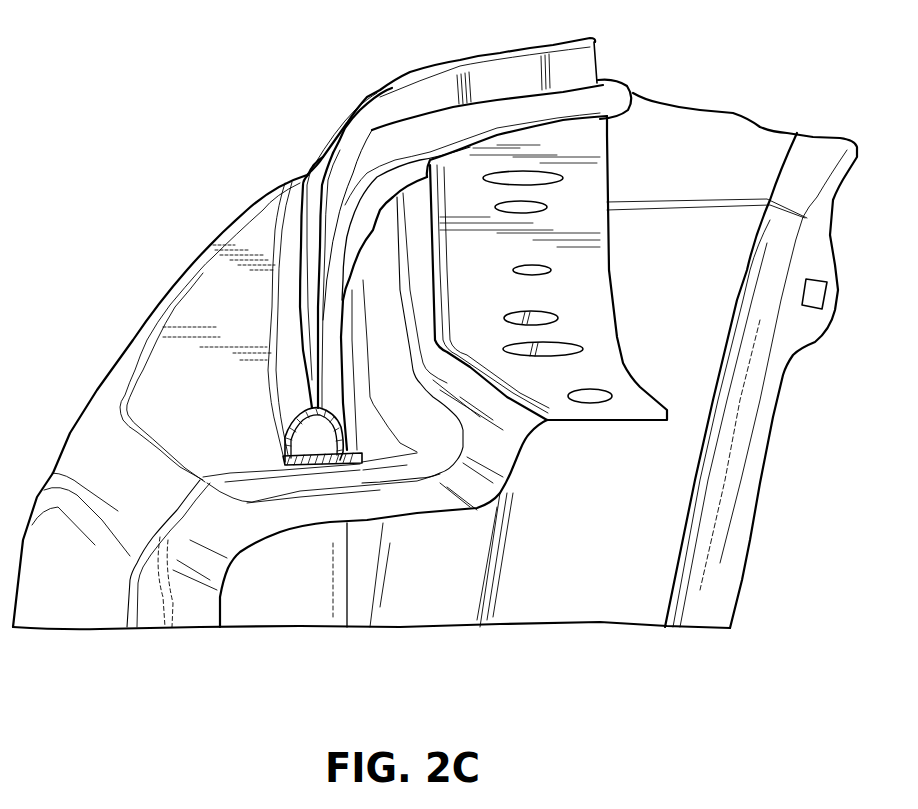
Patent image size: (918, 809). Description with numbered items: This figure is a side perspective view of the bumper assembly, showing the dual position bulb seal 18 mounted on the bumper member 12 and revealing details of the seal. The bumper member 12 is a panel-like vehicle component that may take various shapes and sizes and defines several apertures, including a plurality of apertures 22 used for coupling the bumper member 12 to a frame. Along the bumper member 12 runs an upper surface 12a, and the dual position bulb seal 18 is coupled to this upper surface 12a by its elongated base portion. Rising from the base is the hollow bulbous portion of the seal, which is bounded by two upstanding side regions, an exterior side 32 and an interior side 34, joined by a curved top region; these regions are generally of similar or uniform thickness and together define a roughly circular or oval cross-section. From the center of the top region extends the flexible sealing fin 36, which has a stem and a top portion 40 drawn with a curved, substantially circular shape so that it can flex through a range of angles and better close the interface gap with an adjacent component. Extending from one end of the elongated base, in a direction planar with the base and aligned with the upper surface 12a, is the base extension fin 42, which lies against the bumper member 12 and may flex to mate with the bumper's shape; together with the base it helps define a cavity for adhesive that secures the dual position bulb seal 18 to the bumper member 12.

The bumper member 12 is at (158, 136).
The upper surface 12a is at (222, 292).
The dual position bulb seal 18 is at (309, 136).
The apertures 22 is at (555, 310).
The exterior side 32 is at (287, 393).
The interior side 34 is at (393, 143).
The flexible sealing fin 36 is at (600, 60).
The top portion 40 is at (483, 58).
The base extension fin 42 is at (347, 458).